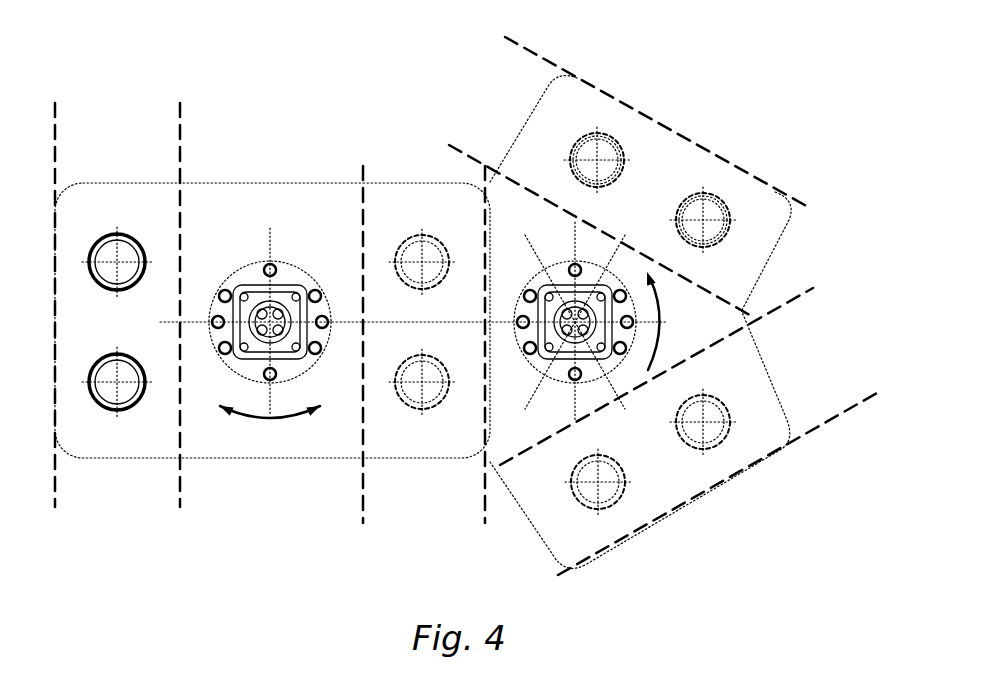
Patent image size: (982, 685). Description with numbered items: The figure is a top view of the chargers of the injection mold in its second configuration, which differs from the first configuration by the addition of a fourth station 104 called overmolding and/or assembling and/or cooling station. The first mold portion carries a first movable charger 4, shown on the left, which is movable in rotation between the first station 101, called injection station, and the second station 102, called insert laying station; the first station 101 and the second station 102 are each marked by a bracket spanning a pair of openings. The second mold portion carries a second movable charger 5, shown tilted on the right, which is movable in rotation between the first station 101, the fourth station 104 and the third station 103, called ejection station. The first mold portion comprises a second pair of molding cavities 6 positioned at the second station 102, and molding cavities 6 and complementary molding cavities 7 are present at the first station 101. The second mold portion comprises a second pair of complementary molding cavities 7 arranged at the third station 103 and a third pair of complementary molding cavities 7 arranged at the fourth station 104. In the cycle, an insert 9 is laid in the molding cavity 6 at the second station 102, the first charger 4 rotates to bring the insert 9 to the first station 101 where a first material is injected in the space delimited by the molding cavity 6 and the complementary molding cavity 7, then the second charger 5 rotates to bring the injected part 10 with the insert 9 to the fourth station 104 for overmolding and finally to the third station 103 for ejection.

The first movable charger 4 is at (247, 490).
The second movable charger 5 is at (735, 520).
The molding cavities 6 is at (236, 317).
The complementary molding cavities 7 is at (702, 322).
The insert 9 is at (84, 280).
The injected part 10 is at (640, 146).
The first station 101 is at (424, 366).
The second station 102 is at (117, 284).
The third station 103 is at (619, 176).
The fourth station 104 is at (696, 430).